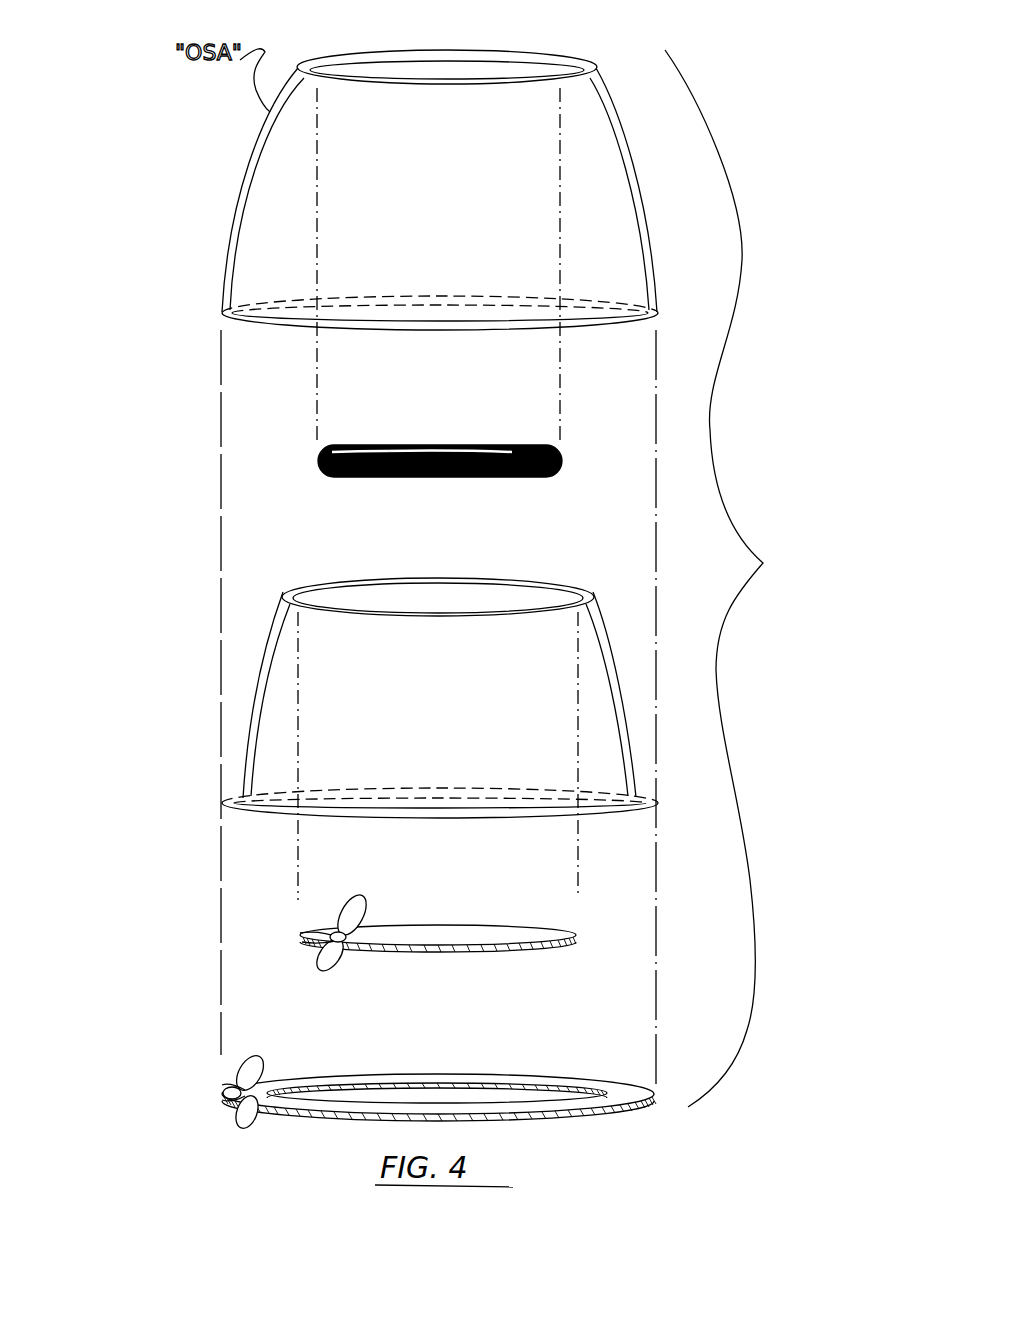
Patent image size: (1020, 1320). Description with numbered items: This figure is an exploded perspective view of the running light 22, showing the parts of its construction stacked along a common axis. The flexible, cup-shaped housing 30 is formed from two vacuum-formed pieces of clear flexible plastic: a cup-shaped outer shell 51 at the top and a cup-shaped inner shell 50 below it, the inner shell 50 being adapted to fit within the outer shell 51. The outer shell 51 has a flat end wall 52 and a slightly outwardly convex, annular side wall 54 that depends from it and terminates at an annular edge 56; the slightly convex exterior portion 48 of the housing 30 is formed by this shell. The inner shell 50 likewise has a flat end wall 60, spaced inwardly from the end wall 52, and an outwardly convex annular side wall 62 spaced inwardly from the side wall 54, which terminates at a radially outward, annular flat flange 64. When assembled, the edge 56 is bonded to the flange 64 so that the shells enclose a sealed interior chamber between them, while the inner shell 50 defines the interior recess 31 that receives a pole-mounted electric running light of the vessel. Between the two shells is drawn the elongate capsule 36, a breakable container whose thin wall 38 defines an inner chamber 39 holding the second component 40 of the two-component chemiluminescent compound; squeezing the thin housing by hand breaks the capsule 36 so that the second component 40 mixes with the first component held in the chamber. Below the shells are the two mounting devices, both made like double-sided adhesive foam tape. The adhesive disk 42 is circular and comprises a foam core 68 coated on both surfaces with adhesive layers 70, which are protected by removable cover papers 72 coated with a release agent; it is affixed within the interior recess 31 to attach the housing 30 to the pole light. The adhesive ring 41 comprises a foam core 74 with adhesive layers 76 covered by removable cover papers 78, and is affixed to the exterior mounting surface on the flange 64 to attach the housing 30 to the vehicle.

The running light 22 is at (739, 578).
The housing 30 is at (127, 182).
The interior recess 31 is at (528, 828).
The capsule 36 is at (314, 456).
The thin wall 38 is at (468, 446).
The inner chamber 39 is at (395, 455).
The second component 40 is at (562, 456).
The adhesive ring 41 is at (606, 1066).
The adhesive disk 42 is at (567, 921).
The exterior portion 48 is at (220, 275).
The inner shell 50 is at (246, 687).
The outer shell 51 is at (198, 222).
The flat end wall 52 is at (465, 72).
The annular side wall 54 is at (247, 172).
The annular edge 56 is at (315, 330).
The flat end wall 60 is at (503, 597).
The annular side wall 62 is at (632, 712).
The annular flat flange 64 is at (365, 825).
The foam core 68 is at (298, 935).
The adhesive layers 70 is at (330, 936).
The removable cover papers 72 is at (356, 906).
The foam core 74 is at (222, 1095).
The adhesive layers 76 is at (228, 1086).
The removable cover papers 78 is at (262, 1062).